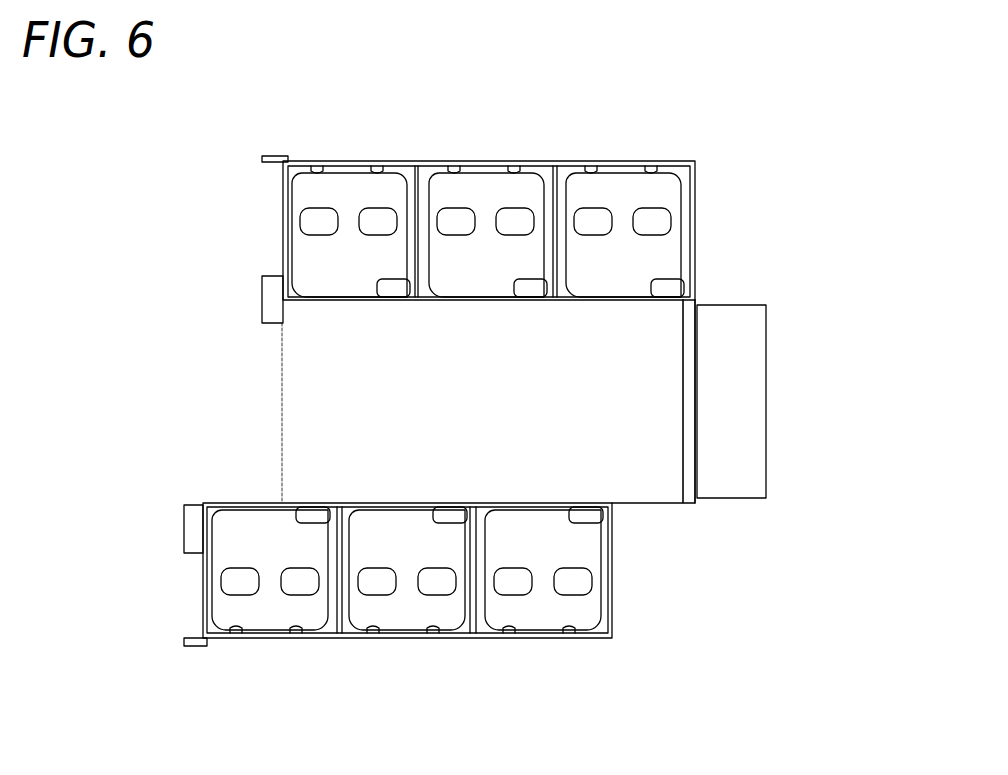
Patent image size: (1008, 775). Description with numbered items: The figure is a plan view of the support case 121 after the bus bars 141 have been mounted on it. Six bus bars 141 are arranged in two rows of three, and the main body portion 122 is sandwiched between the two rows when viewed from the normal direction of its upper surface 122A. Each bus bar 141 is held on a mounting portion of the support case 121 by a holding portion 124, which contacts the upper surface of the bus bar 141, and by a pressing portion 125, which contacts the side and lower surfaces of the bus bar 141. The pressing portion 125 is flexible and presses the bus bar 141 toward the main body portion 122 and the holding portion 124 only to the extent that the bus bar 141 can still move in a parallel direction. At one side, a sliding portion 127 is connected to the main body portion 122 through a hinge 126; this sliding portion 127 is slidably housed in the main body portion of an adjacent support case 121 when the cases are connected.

The support case 121 is at (243, 157).
The main body portion 122 is at (322, 357).
The upper surface of the main body 122A is at (305, 452).
The holding portion 124 is at (535, 290).
The pressing portion 125 is at (312, 174).
The hinge 126 is at (690, 493).
The sliding portion 127 is at (723, 350).
The bus bar 141 is at (347, 190).